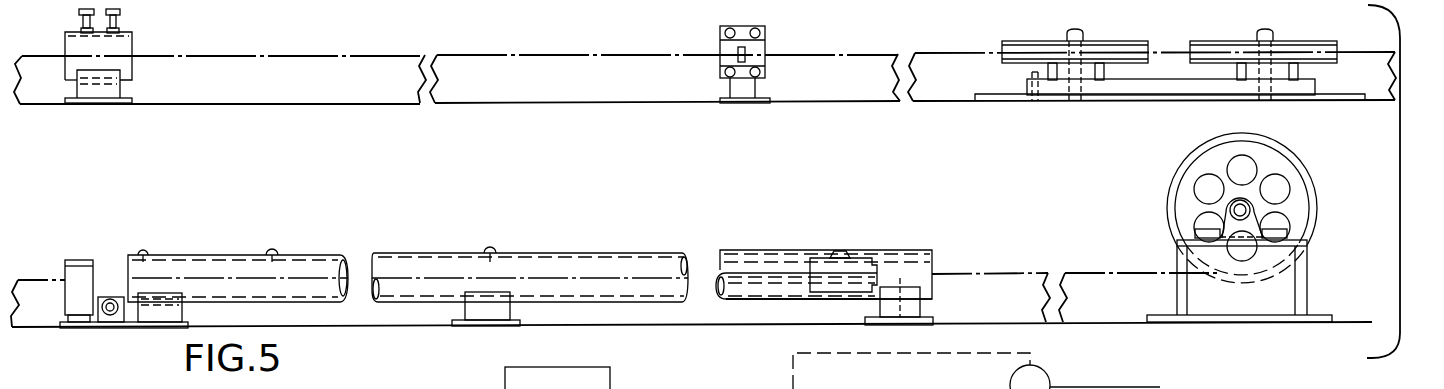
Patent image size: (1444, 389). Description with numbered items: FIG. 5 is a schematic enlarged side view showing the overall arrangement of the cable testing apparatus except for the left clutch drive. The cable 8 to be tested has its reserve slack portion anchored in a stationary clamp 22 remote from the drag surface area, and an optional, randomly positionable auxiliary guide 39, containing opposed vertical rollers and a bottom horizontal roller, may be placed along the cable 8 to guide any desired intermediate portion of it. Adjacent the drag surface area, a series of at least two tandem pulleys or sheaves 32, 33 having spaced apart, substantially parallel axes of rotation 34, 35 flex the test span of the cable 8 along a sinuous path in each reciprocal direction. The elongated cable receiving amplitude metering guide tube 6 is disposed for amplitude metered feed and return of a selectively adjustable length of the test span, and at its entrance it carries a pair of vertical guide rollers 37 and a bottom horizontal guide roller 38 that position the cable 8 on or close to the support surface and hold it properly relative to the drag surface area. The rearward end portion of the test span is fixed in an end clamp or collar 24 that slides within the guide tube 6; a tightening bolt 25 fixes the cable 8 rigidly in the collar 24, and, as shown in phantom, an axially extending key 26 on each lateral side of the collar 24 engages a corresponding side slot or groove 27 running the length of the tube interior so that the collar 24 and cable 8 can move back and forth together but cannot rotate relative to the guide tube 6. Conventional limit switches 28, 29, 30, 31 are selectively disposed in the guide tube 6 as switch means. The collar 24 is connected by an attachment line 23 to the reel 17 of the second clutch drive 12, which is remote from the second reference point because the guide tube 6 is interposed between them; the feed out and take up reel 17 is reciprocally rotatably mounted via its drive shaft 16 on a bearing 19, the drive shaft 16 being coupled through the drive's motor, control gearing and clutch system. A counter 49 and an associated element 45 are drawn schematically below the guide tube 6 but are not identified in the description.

The guide tube 6 is at (536, 258).
The cable 8 is at (765, 287).
The second clutch drive 12 is at (1272, 313).
The drive shaft 16 is at (1252, 202).
The reel 17 is at (1297, 158).
The bearing 19 is at (1245, 226).
The stationary clamp 22 is at (122, 50).
The attachment line 23 is at (930, 272).
The collar 24 is at (848, 297).
The tightening bolt 25 is at (842, 252).
The key 26 is at (828, 283).
The side slot 27 is at (742, 262).
The limit switch 28 is at (900, 247).
The limit switch 29 is at (272, 250).
The limit switch 30 is at (143, 251).
The limit switch 31 is at (490, 247).
The sheave 32 is at (1035, 41).
The sheave 33 is at (1218, 41).
The axis of rotation 34 is at (1073, 29).
The axis of rotation 35 is at (1270, 30).
The vertical guide rollers 37 is at (78, 272).
The bottom horizontal guide roller 38 is at (108, 297).
The auxiliary guide 39 is at (765, 48).
The switch 45 is at (884, 388).
The counter 49 is at (611, 378).